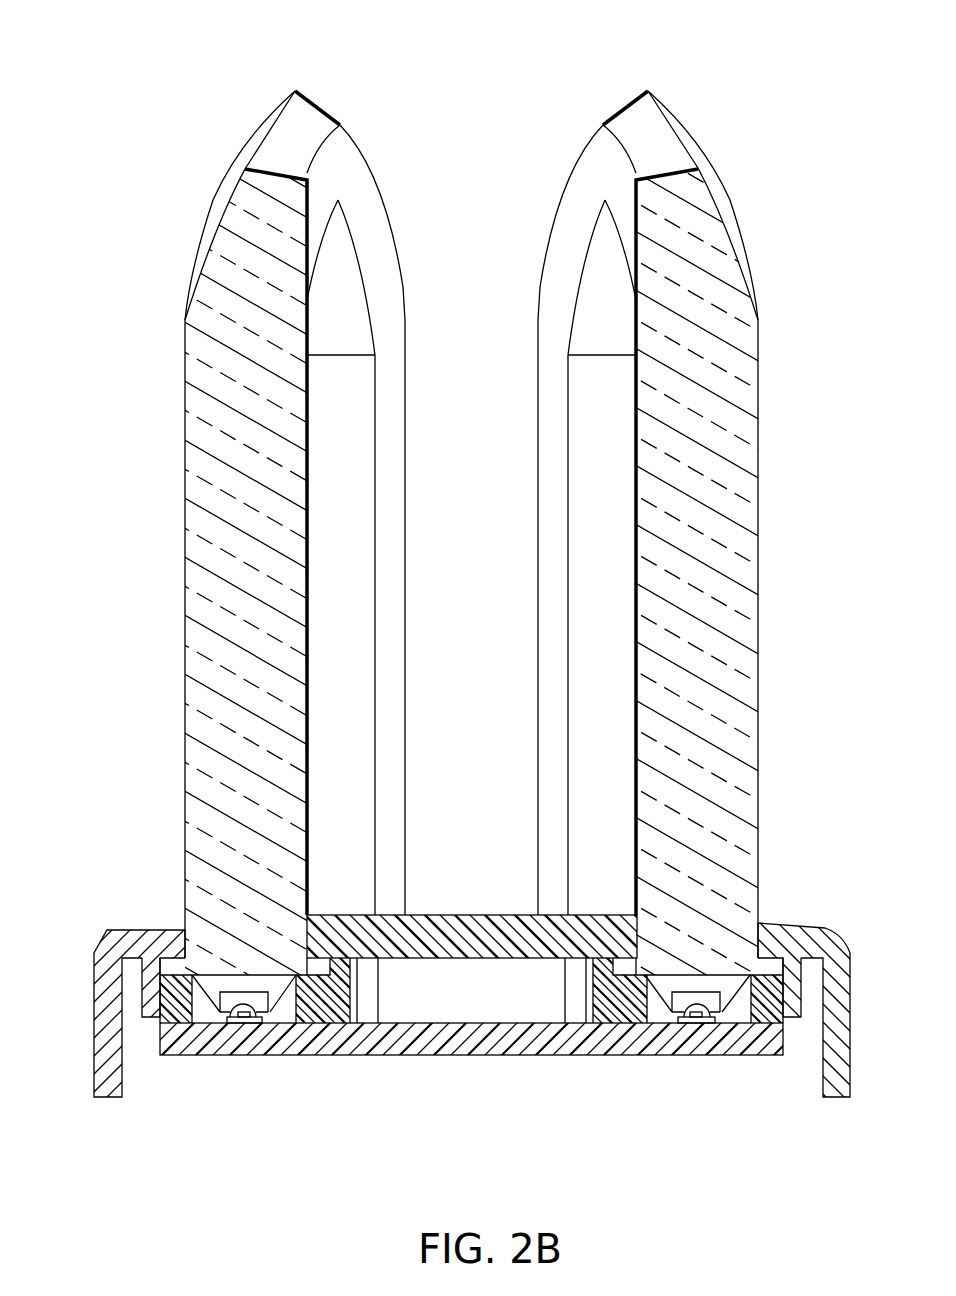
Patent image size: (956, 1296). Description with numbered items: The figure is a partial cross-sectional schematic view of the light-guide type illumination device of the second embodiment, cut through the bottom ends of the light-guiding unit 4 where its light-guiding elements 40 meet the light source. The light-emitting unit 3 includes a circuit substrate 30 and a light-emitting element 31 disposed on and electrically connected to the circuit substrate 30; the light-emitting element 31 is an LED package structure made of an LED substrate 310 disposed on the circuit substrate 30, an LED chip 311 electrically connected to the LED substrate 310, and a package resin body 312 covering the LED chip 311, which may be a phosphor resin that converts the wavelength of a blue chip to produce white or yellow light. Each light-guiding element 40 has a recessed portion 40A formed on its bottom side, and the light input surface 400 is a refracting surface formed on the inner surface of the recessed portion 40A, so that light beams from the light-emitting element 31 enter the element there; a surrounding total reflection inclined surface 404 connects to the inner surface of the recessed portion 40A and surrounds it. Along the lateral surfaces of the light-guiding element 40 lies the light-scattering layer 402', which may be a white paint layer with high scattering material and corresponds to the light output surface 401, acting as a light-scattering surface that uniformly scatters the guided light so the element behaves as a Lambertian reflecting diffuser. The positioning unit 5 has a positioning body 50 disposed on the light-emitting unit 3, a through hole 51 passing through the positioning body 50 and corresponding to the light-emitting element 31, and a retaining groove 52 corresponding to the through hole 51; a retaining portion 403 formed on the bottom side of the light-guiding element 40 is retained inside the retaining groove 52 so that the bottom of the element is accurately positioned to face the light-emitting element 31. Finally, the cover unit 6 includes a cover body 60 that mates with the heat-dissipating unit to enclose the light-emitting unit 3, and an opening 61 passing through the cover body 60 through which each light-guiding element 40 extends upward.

The light-guiding unit 4 is at (336, 50).
The light-guiding element 40 is at (302, 128).
The light output surface 401 is at (248, 139).
The light-scattering layer 402' is at (471, 557).
The retaining portion 403 is at (168, 960).
The recessed portion 40A is at (222, 1003).
The light input surface 400 is at (253, 1008).
The surrounding total reflection inclined surface 404 is at (278, 996).
The positioning unit 5 is at (34, 988).
The positioning body 50 is at (198, 1007).
The through hole 51 is at (175, 1007).
The retaining groove 52 is at (150, 1002).
The light-emitting unit 3 is at (700, 1176).
The circuit substrate 30 is at (597, 1040).
The light-emitting element 31 is at (752, 1123).
The LED substrate 310 is at (677, 1023).
The LED chip 311 is at (697, 1017).
The package resin body 312 is at (718, 1014).
The cover unit 6 is at (818, 826).
The cover body 60 is at (824, 937).
The opening 61 is at (748, 925).